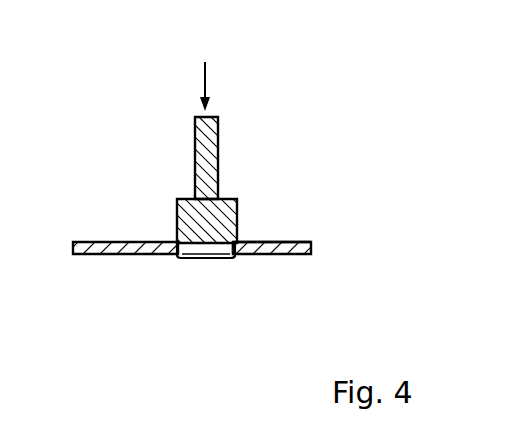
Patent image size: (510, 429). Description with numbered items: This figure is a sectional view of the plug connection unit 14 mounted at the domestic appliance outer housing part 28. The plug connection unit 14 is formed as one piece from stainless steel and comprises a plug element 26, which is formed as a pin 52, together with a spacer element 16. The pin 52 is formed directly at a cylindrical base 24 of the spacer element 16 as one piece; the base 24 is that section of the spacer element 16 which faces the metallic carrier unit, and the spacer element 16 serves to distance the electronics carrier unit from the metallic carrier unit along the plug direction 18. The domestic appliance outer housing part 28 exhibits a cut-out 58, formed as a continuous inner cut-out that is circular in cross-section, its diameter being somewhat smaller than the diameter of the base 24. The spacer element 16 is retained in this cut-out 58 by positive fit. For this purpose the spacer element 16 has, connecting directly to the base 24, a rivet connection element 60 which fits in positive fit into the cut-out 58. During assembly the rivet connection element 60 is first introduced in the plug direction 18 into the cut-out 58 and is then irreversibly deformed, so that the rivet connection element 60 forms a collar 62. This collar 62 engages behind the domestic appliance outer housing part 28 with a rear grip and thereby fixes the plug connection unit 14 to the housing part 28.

The plug connection unit 14 is at (136, 109).
The spacer element 16 is at (187, 213).
The plug direction 18 is at (203, 87).
The cylindrical base 24 is at (198, 225).
The plug element 26 is at (215, 117).
The domestic appliance outer housing part 28 is at (256, 242).
The pin 52 is at (214, 147).
The cut-out 58 is at (237, 241).
The rivet connection element 60 is at (223, 257).
The collar 62 is at (232, 258).